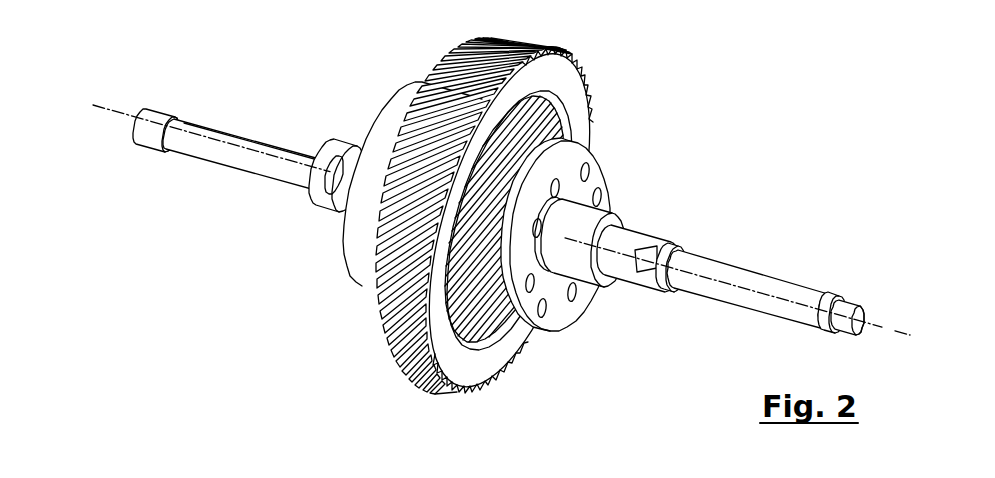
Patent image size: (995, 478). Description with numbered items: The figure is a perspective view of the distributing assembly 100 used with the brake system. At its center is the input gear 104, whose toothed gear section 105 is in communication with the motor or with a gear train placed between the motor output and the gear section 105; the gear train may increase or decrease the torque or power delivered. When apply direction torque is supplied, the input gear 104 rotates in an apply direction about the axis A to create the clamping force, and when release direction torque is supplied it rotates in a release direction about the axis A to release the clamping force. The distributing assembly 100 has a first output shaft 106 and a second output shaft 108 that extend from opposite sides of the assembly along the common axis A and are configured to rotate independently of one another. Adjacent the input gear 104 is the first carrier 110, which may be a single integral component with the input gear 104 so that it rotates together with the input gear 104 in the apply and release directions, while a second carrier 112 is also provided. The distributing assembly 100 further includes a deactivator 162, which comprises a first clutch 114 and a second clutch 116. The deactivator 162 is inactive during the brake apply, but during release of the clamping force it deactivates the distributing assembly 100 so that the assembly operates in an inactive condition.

The distributing assembly 100 is at (477, 223).
The axis A is at (105, 109).
The input gear 104 is at (504, 223).
The gear section 105 is at (428, 388).
The first output shaft 106 is at (247, 152).
The second output shaft 108 is at (770, 290).
The first carrier 110 is at (413, 108).
The second carrier 112 is at (600, 156).
The first clutch 114 is at (350, 146).
The second clutch 116 is at (602, 222).
The deactivator 162 is at (643, 195).